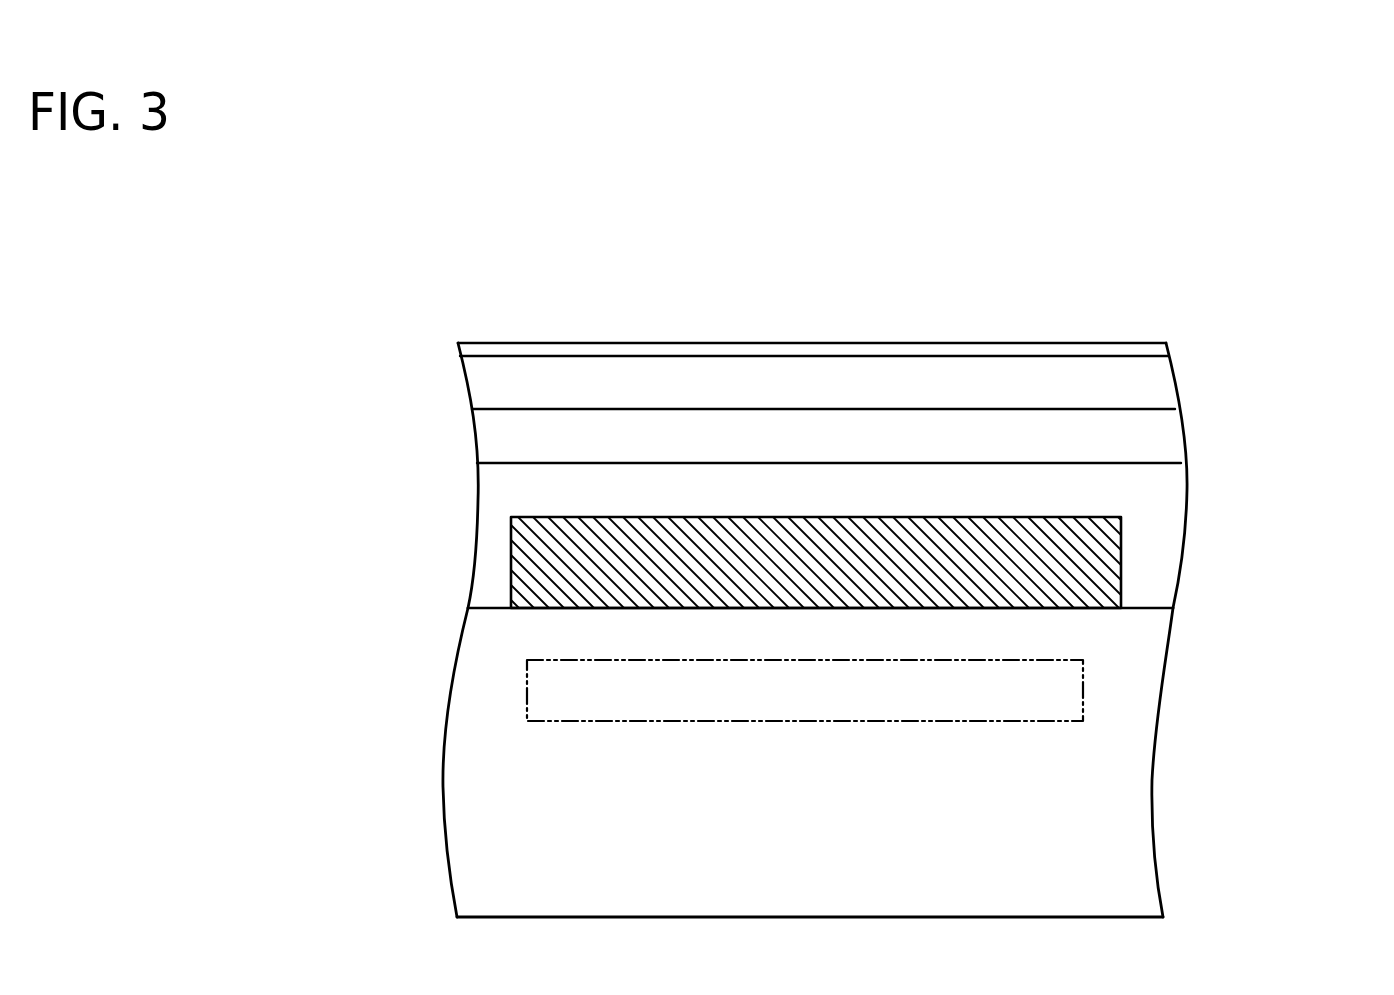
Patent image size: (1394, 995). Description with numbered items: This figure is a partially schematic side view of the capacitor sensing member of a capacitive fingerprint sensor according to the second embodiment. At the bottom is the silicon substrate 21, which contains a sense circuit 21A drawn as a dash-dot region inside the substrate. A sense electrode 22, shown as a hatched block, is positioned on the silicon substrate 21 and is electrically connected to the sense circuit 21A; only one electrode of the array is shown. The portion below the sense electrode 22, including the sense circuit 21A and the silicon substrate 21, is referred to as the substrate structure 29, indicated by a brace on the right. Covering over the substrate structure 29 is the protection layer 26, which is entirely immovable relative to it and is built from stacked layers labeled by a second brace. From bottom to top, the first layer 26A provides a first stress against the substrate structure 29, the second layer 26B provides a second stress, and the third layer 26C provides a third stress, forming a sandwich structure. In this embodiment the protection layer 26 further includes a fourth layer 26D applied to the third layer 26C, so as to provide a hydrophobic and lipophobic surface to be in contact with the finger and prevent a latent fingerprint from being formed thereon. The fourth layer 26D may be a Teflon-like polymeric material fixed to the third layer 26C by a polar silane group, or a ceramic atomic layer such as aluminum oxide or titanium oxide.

The protection layer 26 is at (1303, 354).
The fourth layer 26D is at (1158, 350).
The third layer 26C is at (1165, 385).
The second layer 26B is at (1165, 443).
The first layer 26A is at (1165, 507).
The sense electrode 22 is at (1105, 578).
The sense circuit 21A is at (1083, 700).
The silicon substrate 21 is at (1135, 768).
The substrate structure 29 is at (1300, 627).